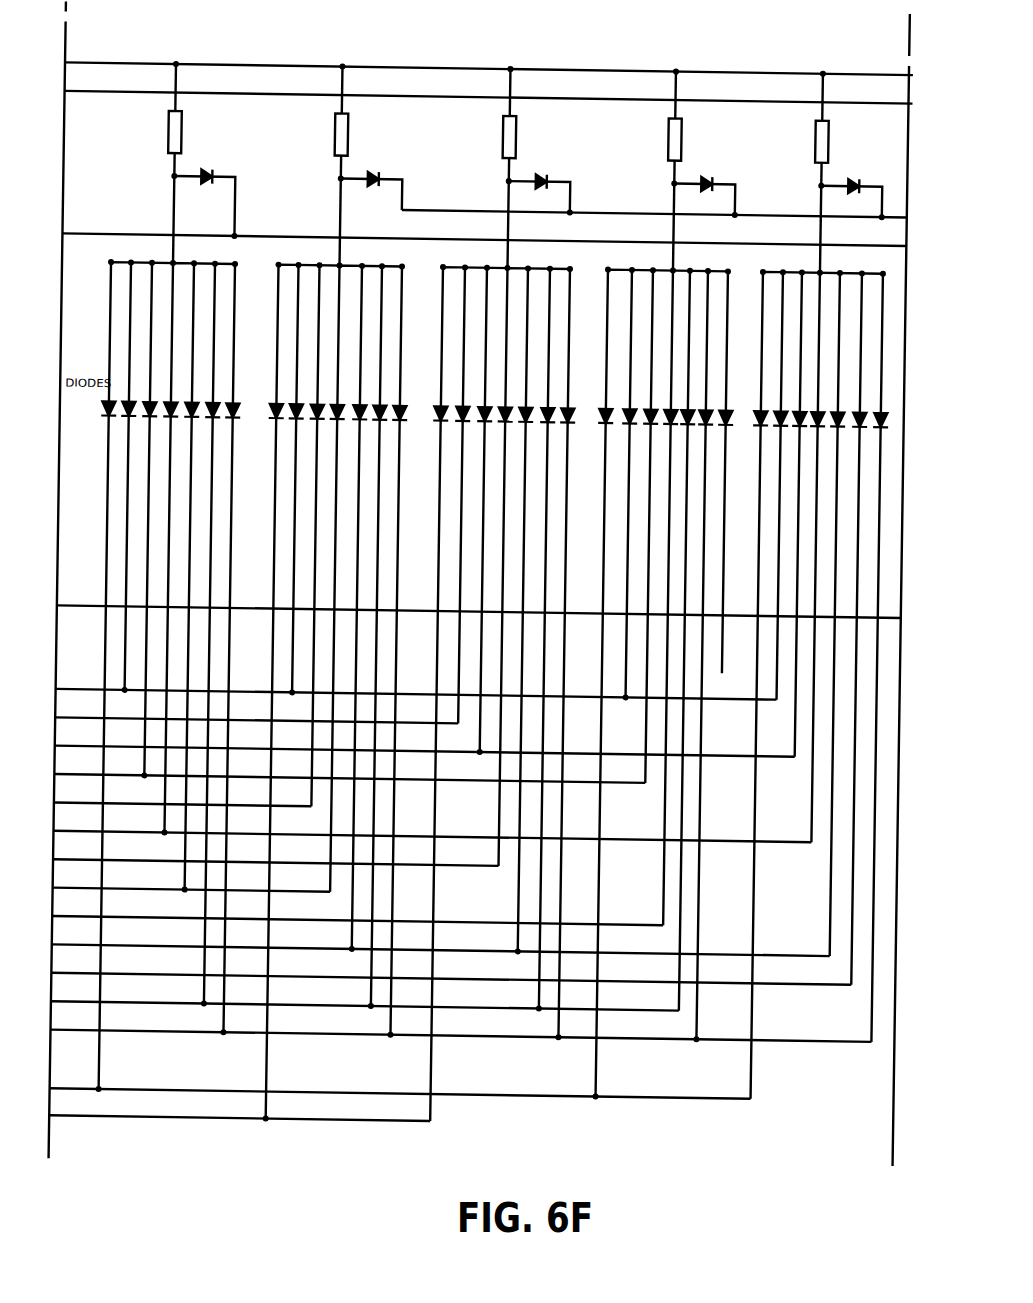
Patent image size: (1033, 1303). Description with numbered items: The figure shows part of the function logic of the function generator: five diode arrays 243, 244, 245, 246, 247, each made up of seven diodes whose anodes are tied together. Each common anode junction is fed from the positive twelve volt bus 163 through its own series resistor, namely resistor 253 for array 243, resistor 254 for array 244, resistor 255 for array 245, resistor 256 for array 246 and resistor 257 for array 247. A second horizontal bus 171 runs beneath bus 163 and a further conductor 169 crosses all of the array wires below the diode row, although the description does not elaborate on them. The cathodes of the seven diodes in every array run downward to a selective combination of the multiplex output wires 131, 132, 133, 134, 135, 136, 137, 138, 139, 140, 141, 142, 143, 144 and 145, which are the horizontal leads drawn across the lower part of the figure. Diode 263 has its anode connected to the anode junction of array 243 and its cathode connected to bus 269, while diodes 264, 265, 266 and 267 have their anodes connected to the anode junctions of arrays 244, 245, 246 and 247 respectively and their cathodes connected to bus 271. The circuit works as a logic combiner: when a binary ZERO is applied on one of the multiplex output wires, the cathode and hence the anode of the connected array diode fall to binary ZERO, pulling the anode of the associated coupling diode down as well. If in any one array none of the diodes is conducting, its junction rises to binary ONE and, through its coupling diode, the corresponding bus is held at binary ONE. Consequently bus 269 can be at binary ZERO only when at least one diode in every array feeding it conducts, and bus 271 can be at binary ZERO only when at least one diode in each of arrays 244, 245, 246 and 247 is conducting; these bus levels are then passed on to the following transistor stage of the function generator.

The positive 12 volt bus 163 is at (489, 54).
The second bus conductor 171 is at (489, 83).
The common conductor 169 is at (479, 594).
The bus 269 is at (484, 227).
The bus 271 is at (654, 196).
The resistor 253 is at (175, 131).
The resistor 254 is at (341, 131).
The resistor 255 is at (509, 131).
The resistor 256 is at (675, 131).
The resistor 257 is at (822, 131).
The diode 263 is at (198, 189).
The diode 264 is at (365, 189).
The diode 265 is at (543, 177).
The diode 266 is at (706, 177).
The diode 267 is at (855, 177).
The diode array 243 is at (146, 263).
The diode array 244 is at (319, 264).
The diode array 245 is at (480, 263).
The diode array 246 is at (647, 265).
The diode array 247 is at (802, 263).
The multiplex output wire 131 is at (400, 1080).
The multiplex output wire 132 is at (239, 1108).
The multiplex output wire 133 is at (416, 679).
The multiplex output wire 134 is at (256, 710).
The multiplex output wire 135 is at (425, 741).
The multiplex output wire 136 is at (349, 769).
The multiplex output wire 137 is at (183, 794).
The multiplex output wire 138 is at (432, 827).
The multiplex output wire 139 is at (276, 853).
The multiplex output wire 140 is at (192, 879).
The multiplex output wire 141 is at (357, 911).
The multiplex output wire 142 is at (441, 940).
The multiplex output wire 143 is at (451, 969).
The multiplex output wire 144 is at (365, 996).
The multiplex output wire 145 is at (460, 1025).